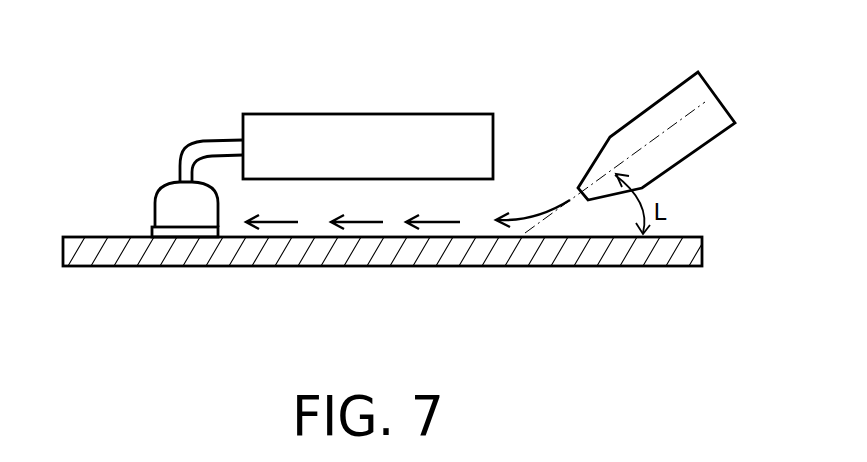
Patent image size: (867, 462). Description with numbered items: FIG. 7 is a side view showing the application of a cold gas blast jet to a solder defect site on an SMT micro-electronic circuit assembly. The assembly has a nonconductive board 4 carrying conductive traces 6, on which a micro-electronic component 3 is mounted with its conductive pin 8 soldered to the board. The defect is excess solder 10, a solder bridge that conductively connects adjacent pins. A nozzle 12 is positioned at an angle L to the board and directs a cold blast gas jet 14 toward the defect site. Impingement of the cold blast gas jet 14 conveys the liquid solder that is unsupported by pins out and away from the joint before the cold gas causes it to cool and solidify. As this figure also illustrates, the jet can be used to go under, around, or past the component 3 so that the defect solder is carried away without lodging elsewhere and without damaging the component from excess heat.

The micro-electronic component 3 is at (347, 114).
The nonconductive board 4 is at (370, 267).
The conductive traces 6 is at (150, 228).
The conductive pin 8 is at (196, 146).
The excess solder 10 is at (155, 193).
The nozzle 12 is at (680, 82).
The cold blast gas jet 14 is at (522, 228).